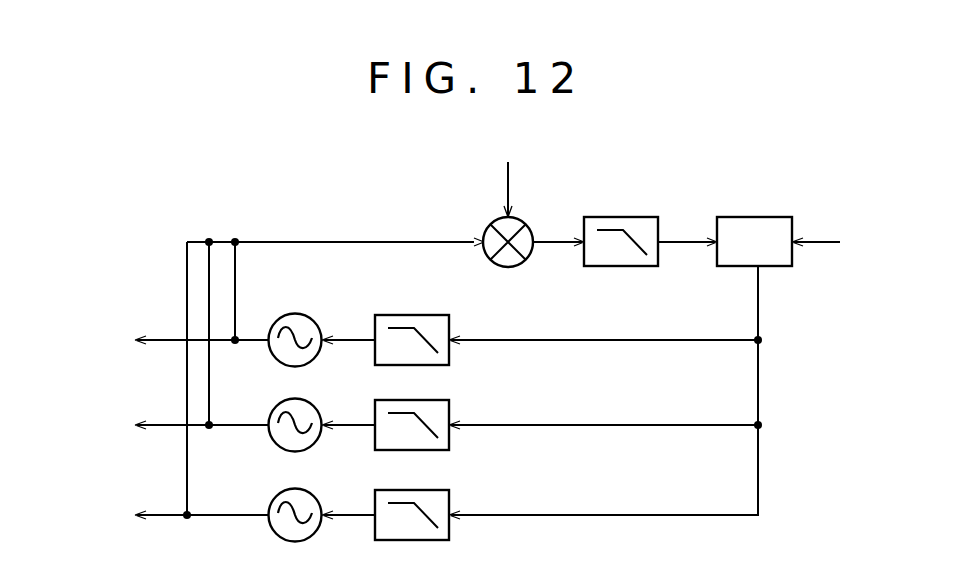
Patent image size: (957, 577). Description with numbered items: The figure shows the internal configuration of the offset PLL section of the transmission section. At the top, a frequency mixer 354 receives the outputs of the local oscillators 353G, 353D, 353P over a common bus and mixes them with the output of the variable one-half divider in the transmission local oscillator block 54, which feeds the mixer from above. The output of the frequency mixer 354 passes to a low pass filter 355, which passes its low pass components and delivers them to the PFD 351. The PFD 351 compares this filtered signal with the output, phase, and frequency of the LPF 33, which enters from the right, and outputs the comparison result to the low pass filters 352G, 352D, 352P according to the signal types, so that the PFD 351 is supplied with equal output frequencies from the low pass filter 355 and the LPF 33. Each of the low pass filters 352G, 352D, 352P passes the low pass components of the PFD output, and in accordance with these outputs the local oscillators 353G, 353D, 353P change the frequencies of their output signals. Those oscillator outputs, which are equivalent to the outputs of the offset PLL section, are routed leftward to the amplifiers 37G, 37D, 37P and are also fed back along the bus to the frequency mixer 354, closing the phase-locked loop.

The transmission local oscillator block 54 is at (507, 175).
The frequency mixer 354 is at (524, 222).
The low pass filter 355 is at (620, 216).
The PFD 351 is at (757, 216).
The LPF 33 is at (835, 242).
The low pass filter 352G is at (449, 319).
The low pass filter 352D is at (449, 404).
The low pass filter 352P is at (449, 494).
The local oscillator 353G is at (316, 320).
The local oscillator 353D is at (316, 405).
The local oscillator 353P is at (316, 495).
The amplifier 37G is at (174, 340).
The amplifier 37D is at (174, 425).
The amplifier 37P is at (174, 515).